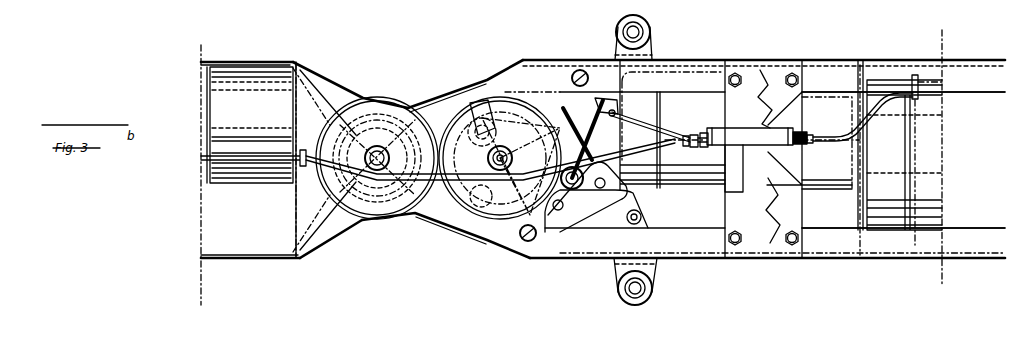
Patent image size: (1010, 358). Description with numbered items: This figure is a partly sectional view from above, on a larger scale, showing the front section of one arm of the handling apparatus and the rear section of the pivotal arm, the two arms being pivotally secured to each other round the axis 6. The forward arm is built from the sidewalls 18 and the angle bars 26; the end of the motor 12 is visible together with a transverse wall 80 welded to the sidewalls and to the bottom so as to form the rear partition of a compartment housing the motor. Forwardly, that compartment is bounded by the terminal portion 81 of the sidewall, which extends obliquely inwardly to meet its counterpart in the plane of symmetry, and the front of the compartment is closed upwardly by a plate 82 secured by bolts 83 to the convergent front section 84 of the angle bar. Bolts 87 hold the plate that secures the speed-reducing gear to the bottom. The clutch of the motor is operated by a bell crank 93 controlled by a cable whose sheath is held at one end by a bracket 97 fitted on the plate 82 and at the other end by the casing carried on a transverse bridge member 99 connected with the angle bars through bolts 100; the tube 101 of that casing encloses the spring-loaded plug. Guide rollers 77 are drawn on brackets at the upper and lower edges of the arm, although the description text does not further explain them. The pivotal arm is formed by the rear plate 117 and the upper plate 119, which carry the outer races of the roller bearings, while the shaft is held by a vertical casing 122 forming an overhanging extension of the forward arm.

The rear plate 117 is at (312, 93).
The upper plate 119 is at (333, 98).
The axis 6 is at (377, 152).
The vertical casing 122 is at (423, 98).
The terminal portion of sidewall 81 is at (483, 240).
The bolts 83 is at (483, 117).
The front section of angle bar 84 is at (512, 84).
The plate 82 is at (540, 64).
The bracket 97 is at (603, 103).
The bell crank 93 is at (615, 113).
The bolts 87 is at (633, 221).
The lower guide roller 77 is at (653, 296).
The sidewall 18 is at (697, 258).
The bolts 100 is at (787, 243).
The transverse bridge member 99 is at (773, 97).
The tube 101 is at (738, 162).
The transverse wall 80 is at (862, 147).
The motor 12 is at (928, 178).
The angle bar 26 is at (840, 247).